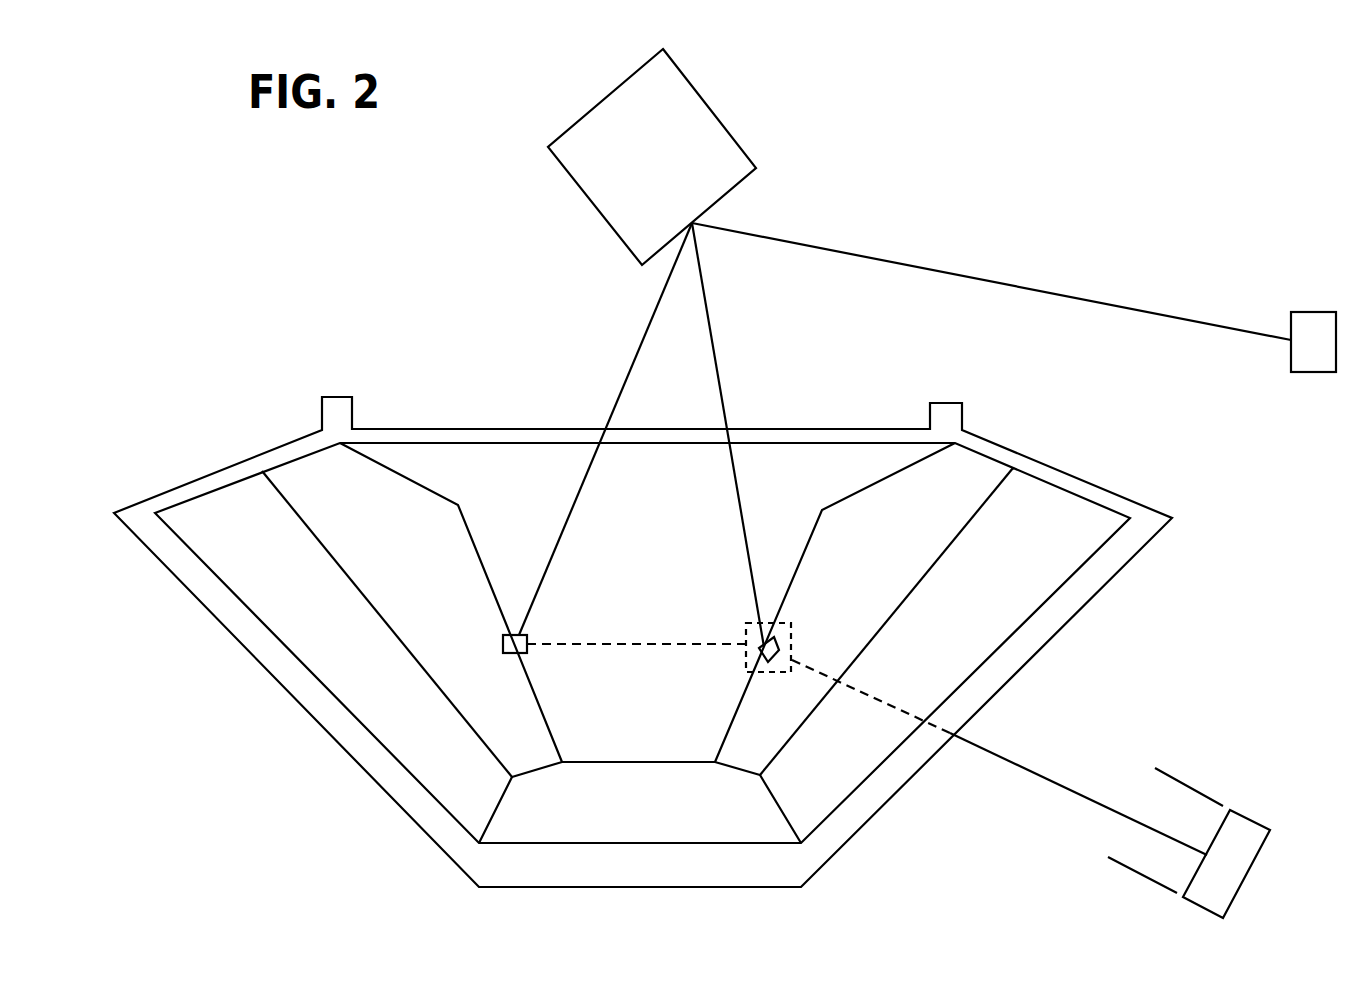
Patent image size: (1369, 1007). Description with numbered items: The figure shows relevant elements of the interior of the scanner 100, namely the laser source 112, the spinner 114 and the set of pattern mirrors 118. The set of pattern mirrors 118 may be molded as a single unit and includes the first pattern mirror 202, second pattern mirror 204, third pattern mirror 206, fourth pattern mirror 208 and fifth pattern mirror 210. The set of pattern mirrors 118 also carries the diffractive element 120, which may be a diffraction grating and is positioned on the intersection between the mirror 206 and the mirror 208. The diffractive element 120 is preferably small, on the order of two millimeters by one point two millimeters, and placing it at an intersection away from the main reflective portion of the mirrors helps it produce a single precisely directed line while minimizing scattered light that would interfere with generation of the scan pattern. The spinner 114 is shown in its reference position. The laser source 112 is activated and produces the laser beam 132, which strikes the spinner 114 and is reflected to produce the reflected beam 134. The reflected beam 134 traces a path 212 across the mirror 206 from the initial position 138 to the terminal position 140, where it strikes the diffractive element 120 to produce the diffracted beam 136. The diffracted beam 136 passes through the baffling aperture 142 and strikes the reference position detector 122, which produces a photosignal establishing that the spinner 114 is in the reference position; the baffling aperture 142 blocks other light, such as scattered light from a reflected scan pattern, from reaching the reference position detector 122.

The scanner 100 is at (252, 274).
The laser source 112 is at (1308, 312).
The spinner 114 is at (720, 121).
The set of pattern mirrors 118 is at (467, 429).
The diffractive element 120 is at (762, 645).
The reference position detector 122 is at (1247, 817).
The laser beam 132 is at (1010, 283).
The reflected beam 134 is at (637, 350).
The diffracted beam 136 is at (1045, 780).
The initial position 138 is at (503, 641).
The terminal position 140 is at (796, 652).
The baffling aperture 142 is at (1170, 775).
The first pattern mirror 202 is at (303, 594).
The second pattern mirror 204 is at (428, 569).
The third pattern mirror 206 is at (678, 554).
The fourth pattern mirror 208 is at (893, 562).
The fifth pattern mirror 210 is at (970, 649).
The path 212 is at (633, 648).